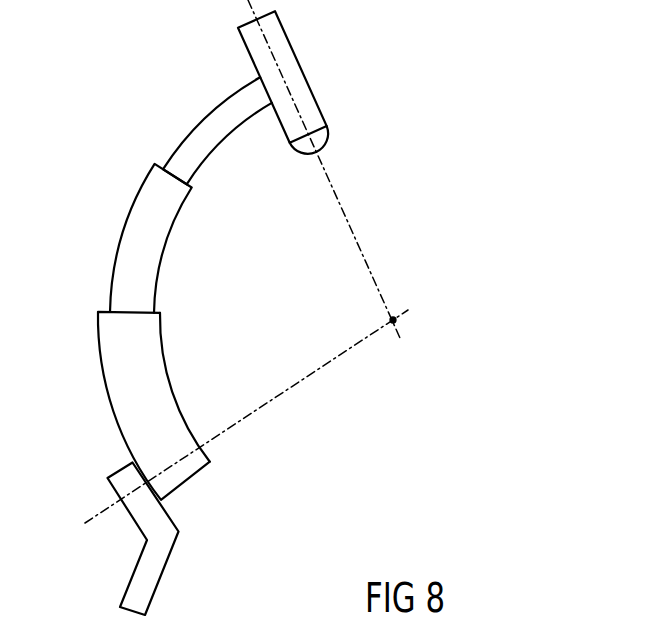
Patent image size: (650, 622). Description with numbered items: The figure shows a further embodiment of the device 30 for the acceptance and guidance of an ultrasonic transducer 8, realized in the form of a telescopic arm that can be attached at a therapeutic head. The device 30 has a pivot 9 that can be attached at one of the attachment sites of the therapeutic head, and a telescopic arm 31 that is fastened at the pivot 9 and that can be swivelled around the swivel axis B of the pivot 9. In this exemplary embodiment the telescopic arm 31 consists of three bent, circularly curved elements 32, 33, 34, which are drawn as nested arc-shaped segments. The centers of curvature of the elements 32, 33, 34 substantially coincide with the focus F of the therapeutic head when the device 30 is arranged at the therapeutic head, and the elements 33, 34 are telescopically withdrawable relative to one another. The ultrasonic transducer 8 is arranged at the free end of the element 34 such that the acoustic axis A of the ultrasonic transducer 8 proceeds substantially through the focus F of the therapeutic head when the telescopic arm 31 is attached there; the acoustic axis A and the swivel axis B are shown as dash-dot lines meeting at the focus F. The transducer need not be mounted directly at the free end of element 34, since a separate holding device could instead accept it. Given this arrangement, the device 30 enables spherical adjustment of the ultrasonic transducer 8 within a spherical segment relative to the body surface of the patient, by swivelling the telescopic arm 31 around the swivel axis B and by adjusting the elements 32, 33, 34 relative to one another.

The ultrasonic transducer 8 is at (297, 77).
The pivot 9 is at (150, 567).
The device 30 is at (153, 285).
The telescopic arm 31 is at (168, 365).
The curved element 32 is at (144, 406).
The curved element 33 is at (128, 257).
The curved element 34 is at (193, 140).
The acoustic axis A is at (340, 205).
The swivel axis B is at (277, 397).
The focus F is at (395, 318).